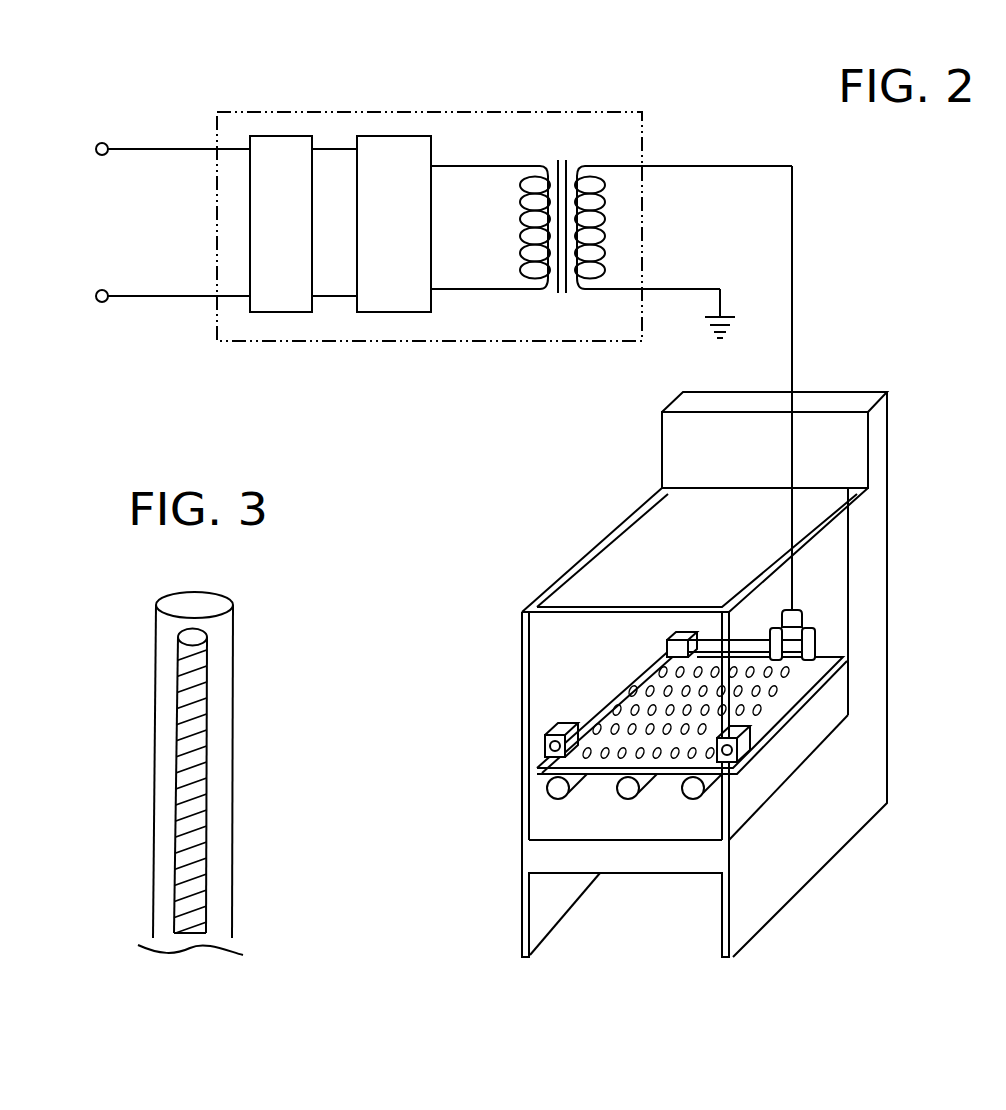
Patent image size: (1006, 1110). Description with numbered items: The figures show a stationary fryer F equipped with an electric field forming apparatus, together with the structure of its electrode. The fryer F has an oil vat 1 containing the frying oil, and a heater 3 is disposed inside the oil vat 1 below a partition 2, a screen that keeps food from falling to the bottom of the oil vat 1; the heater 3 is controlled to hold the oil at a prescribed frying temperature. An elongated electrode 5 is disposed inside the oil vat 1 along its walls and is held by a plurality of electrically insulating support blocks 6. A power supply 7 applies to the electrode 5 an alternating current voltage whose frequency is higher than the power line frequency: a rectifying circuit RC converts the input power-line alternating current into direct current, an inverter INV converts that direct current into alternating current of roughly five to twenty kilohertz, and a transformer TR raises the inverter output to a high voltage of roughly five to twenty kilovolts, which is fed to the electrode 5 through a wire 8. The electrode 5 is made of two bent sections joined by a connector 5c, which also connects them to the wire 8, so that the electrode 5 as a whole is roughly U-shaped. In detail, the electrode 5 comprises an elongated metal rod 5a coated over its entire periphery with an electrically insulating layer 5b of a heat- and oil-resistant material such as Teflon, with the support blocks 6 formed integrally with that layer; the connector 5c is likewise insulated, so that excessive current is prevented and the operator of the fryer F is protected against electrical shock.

In FIG. 2, the oil vat 1 is at (625, 575).
In FIG. 2, the partition 2 is at (563, 725).
In FIG. 2, the heater 3 is at (548, 789).
In FIG. 2, the electrode 5 is at (622, 690).
In FIG. 3, the electrode 5 is at (195, 763).
In FIG. 3, the metal rod 5a is at (198, 716).
In FIG. 3, the electrically insulating layer 5b is at (222, 827).
In FIG. 2, the connector 5c is at (822, 642).
In FIG. 2, the support blocks 6 is at (667, 645).
In FIG. 2, the power supply 7 is at (444, 241).
In FIG. 2, the wire 8 is at (790, 258).
In FIG. 2, the fryer F is at (905, 472).
In FIG. 2, the rectifying circuit RC is at (273, 288).
In FIG. 2, the inverter INV is at (392, 288).
In FIG. 2, the transformer TR is at (547, 277).